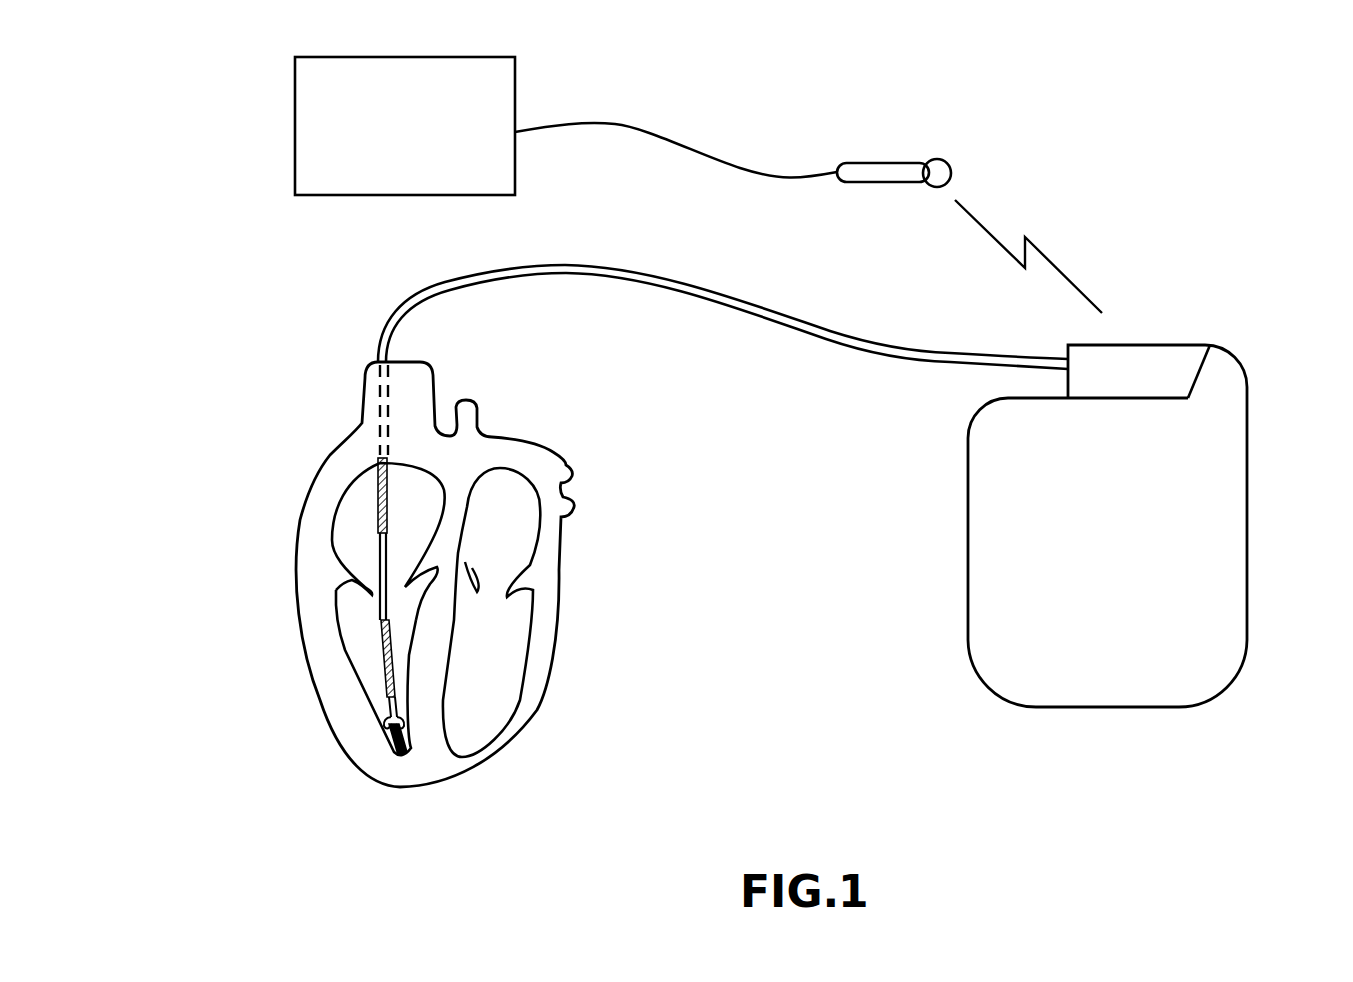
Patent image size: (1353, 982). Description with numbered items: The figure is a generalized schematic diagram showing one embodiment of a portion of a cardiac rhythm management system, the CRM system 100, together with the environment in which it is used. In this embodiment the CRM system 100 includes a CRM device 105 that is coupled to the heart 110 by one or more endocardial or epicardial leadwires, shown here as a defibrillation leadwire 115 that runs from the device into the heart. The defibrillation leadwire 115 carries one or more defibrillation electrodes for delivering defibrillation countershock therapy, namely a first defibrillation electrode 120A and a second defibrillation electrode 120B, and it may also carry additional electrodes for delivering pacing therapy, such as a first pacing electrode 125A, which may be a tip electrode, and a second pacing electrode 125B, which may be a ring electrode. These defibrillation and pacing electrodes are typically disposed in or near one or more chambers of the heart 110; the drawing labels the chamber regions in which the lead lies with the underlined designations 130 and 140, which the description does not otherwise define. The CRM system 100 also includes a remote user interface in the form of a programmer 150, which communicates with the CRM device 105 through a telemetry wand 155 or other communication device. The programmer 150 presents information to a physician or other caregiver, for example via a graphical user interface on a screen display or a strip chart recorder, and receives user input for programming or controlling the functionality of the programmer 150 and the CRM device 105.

The CRM system 100 is at (1258, 812).
The CRM device 105 is at (1248, 420).
The heart 110 is at (513, 712).
The defibrillation leadwire 115 is at (722, 296).
The first defibrillation electrode 120A is at (383, 672).
The second defibrillation electrode 120B is at (380, 463).
The first pacing electrode 125A is at (401, 756).
The second pacing electrode 125B is at (391, 711).
The right atrium 130 is at (427, 538).
The right ventricle 140 is at (374, 633).
The programmer 150 is at (517, 79).
The telemetry wand 155 is at (945, 162).